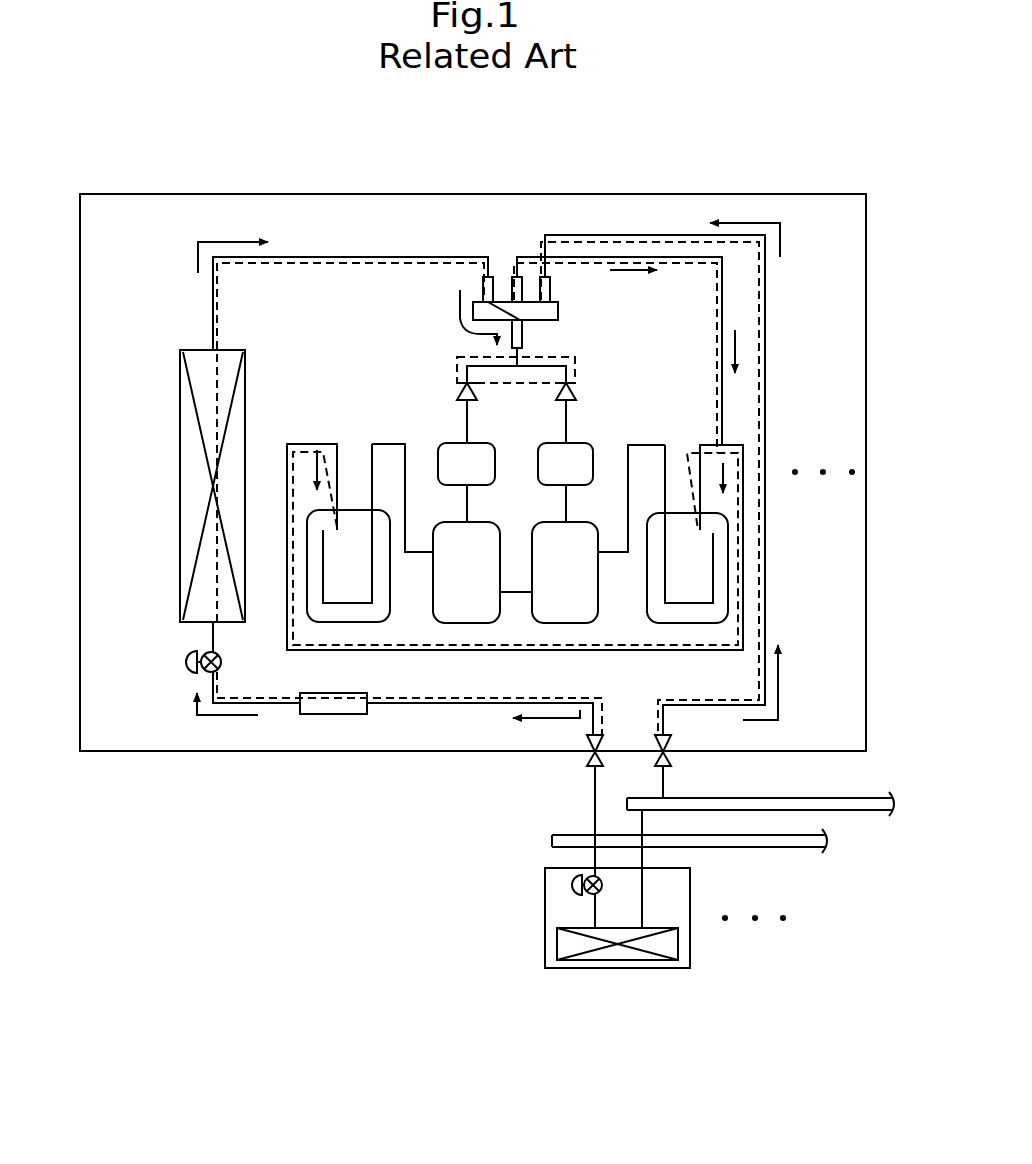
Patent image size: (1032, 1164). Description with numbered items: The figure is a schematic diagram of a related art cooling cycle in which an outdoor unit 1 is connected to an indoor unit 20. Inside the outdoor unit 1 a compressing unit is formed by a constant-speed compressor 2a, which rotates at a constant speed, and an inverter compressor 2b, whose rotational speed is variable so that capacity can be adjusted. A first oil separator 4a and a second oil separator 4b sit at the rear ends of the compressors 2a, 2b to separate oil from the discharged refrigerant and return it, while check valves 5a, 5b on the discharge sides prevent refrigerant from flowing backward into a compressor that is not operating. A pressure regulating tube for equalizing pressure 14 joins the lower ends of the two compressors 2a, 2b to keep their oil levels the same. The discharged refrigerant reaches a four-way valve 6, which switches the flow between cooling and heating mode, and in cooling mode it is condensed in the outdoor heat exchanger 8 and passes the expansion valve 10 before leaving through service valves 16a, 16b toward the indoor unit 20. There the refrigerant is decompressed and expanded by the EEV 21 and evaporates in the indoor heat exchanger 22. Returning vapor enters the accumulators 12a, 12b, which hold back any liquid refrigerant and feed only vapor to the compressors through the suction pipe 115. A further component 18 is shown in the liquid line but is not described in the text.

The outdoor unit 1 is at (560, 193).
The constant-speed compressor 2a is at (447, 612).
The inverter compressor 2b is at (585, 615).
The first oil separator 4a is at (448, 445).
The second oil separator 4b is at (587, 445).
The check valve 5a is at (463, 393).
The check valve 5b is at (573, 390).
The four-way valve 6 is at (558, 312).
The outdoor heat exchanger 8 is at (190, 483).
The expansion valve 10 is at (187, 660).
The accumulator 12a is at (340, 613).
The accumulator 12b is at (717, 582).
The pressure regulating tube for equalizing pressure 14 is at (517, 590).
The suction pipe 115 is at (405, 478).
The service valve 16a is at (585, 760).
The service valve 16b is at (673, 760).
The strainer 18 is at (330, 714).
The indoor unit 20 is at (544, 992).
The EEV 21 is at (572, 883).
The indoor heat exchanger 22 is at (618, 953).